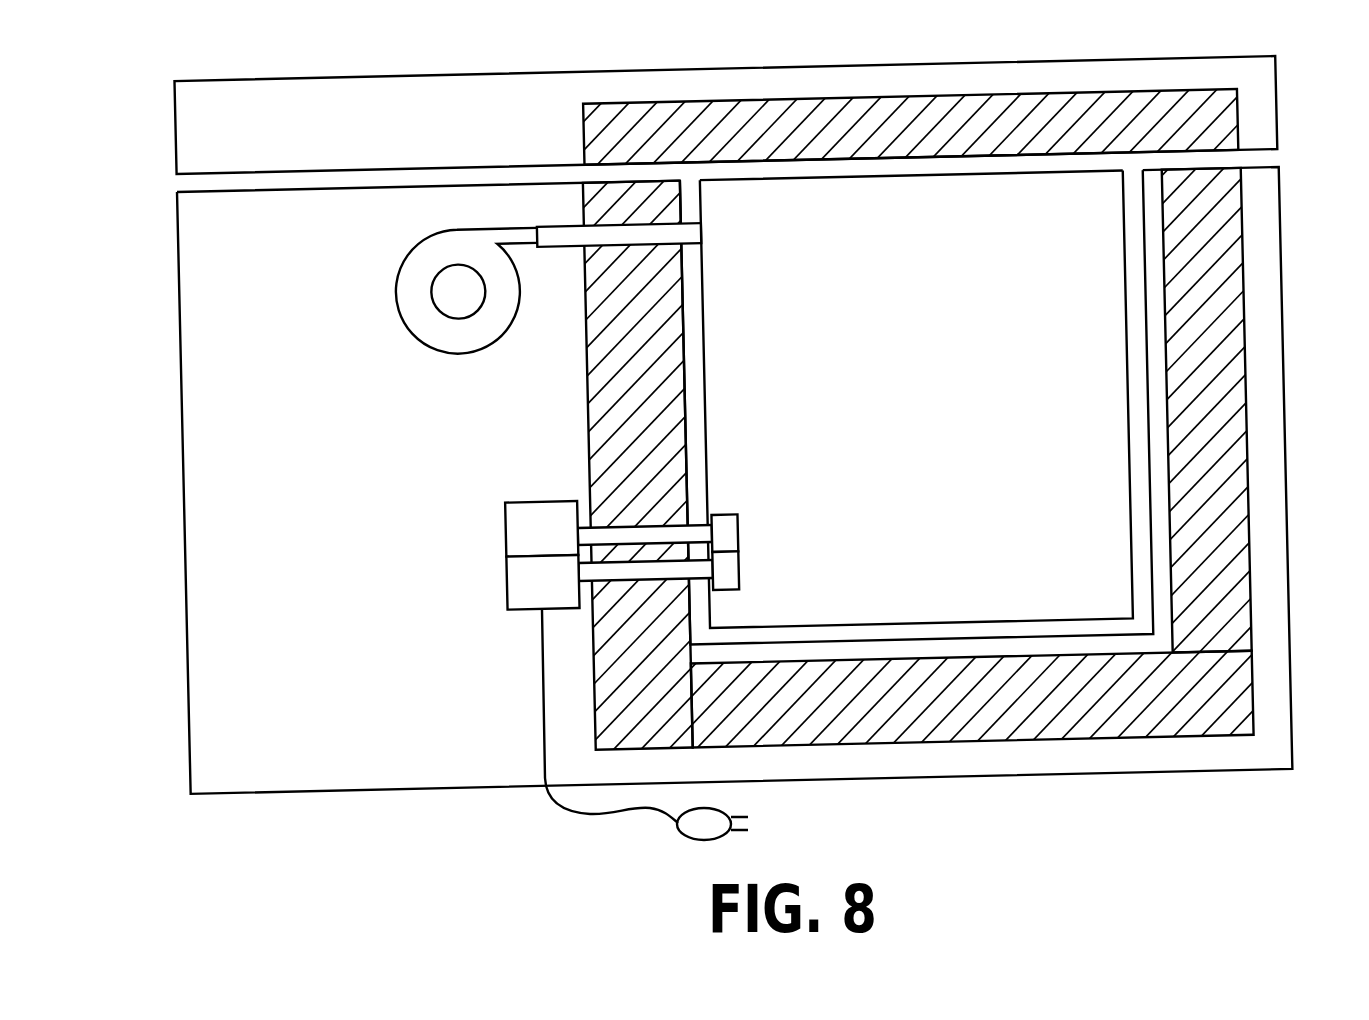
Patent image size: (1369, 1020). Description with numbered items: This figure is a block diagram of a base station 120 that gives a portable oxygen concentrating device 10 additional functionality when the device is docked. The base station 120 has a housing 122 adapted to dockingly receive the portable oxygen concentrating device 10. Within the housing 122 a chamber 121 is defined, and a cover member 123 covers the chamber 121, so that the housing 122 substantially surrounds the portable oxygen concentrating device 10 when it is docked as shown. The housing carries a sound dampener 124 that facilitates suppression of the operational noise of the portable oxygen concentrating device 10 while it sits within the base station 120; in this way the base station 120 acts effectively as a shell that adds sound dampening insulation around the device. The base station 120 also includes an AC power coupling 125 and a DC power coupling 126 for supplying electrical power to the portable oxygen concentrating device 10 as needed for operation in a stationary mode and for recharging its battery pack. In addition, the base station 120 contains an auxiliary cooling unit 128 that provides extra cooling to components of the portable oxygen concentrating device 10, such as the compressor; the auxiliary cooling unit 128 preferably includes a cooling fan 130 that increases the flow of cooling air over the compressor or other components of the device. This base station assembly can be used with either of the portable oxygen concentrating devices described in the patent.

The portable oxygen concentrating device 10 is at (933, 403).
The base station 120 is at (176, 105).
The chamber 121 is at (1138, 430).
The housing 122 is at (177, 220).
The cover member 123 is at (1268, 100).
The sound dampener 124 is at (590, 410).
The AC power coupling 125 is at (506, 542).
The DC power coupling 126 is at (508, 590).
The auxiliary cooling unit 128 is at (387, 393).
The cooling fan 130 is at (396, 310).